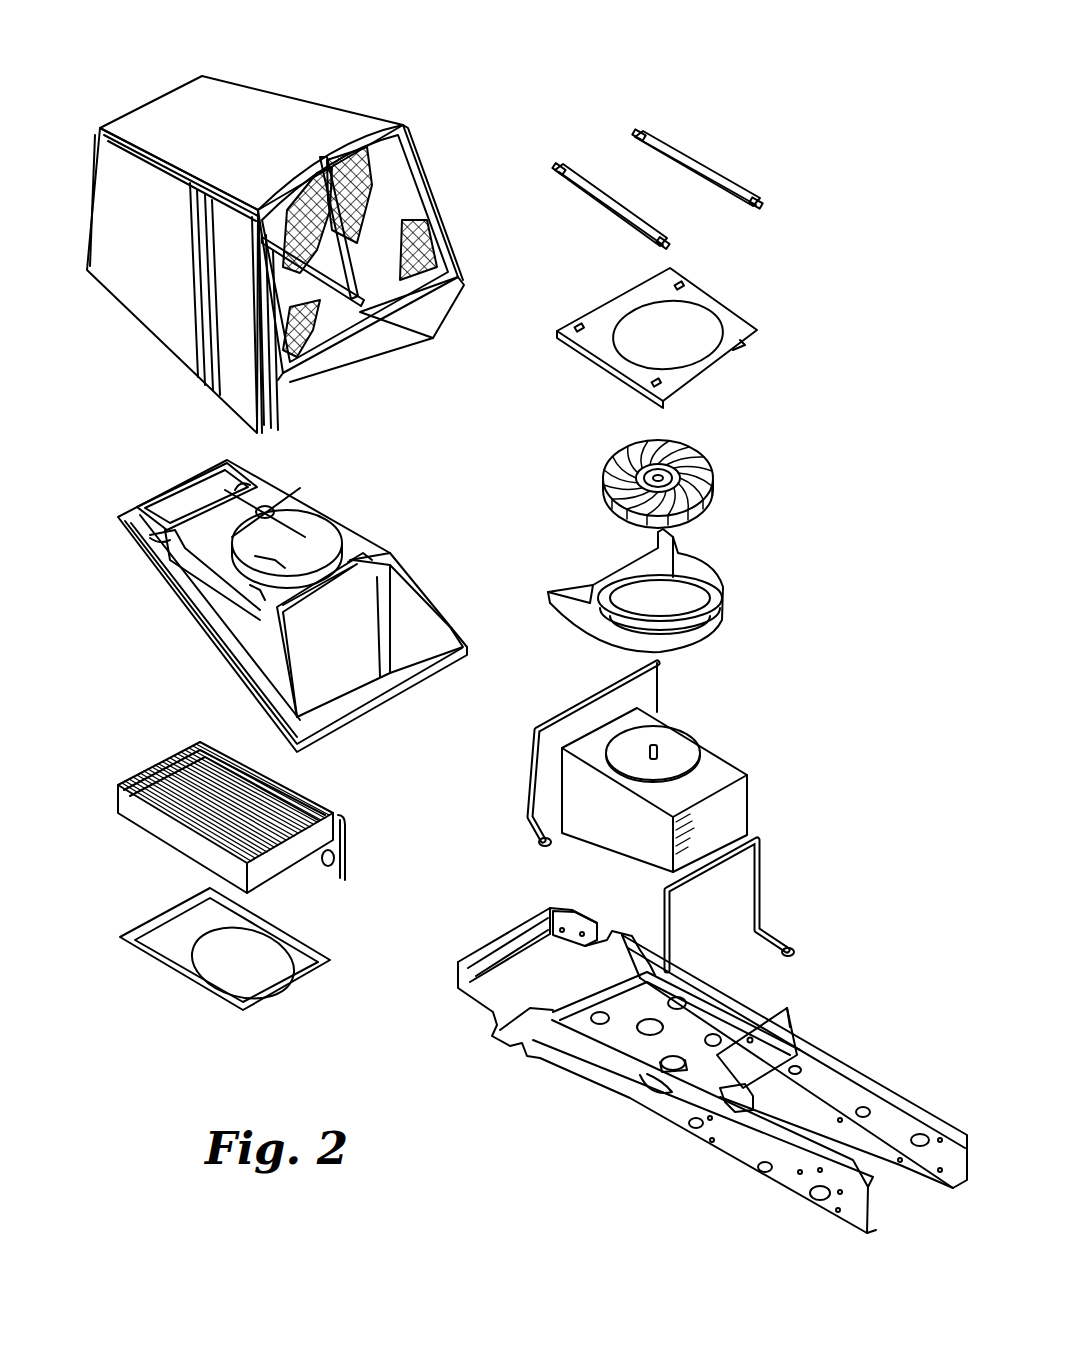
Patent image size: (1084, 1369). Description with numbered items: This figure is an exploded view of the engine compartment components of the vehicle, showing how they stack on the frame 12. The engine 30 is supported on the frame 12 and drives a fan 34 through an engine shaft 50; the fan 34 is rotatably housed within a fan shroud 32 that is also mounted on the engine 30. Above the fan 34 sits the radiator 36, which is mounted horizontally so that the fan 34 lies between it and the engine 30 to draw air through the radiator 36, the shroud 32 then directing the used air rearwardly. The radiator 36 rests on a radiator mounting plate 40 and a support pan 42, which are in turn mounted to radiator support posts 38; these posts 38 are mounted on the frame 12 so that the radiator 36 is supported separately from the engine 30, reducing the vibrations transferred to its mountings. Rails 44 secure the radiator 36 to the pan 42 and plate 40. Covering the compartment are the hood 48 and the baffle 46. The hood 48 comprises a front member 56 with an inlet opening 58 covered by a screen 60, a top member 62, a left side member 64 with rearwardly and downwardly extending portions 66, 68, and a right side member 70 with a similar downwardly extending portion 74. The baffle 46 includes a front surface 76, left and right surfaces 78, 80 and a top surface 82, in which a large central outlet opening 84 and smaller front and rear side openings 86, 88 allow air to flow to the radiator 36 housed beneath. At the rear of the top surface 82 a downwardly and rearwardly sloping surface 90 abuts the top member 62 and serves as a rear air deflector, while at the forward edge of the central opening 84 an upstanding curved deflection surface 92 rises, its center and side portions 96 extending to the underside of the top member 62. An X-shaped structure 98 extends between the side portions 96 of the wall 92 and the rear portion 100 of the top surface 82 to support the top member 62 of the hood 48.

The frame 12 is at (830, 1075).
The engine 30 is at (681, 790).
The fan shroud 32 is at (722, 620).
The fan 34 is at (705, 483).
The radiator 36 is at (330, 845).
The radiator support posts 38 is at (660, 697).
The radiator mounting plate 40 is at (727, 318).
The support pan 42 is at (300, 960).
The rails 44 is at (693, 170).
The baffle 46 is at (294, 588).
The hood 48 is at (299, 224).
The engine shaft 50 is at (660, 750).
The front member 56 is at (462, 268).
The inlet opening 58 is at (400, 197).
The screen 60 is at (330, 318).
The top member 62 is at (305, 113).
The left side member 64 is at (122, 303).
The rearwardly extending portion 66 is at (175, 208).
The downwardly extending portion 68 is at (240, 386).
The right side member 70 is at (384, 239).
The downwardly extending portion 74 is at (445, 306).
The front surface 76 is at (345, 700).
The left surface 78 is at (250, 665).
The right surface 80 is at (425, 590).
The top surface 82 is at (330, 605).
The central outlet opening 84 is at (165, 558).
The front side openings 86 is at (375, 540).
The rear side openings 88 is at (150, 483).
The sloping surface 90 is at (200, 490).
The deflection surface 92 is at (370, 550).
The side portions 96 is at (255, 555).
The X-shaped structure 98 is at (285, 492).
The rear portion 100 is at (150, 538).